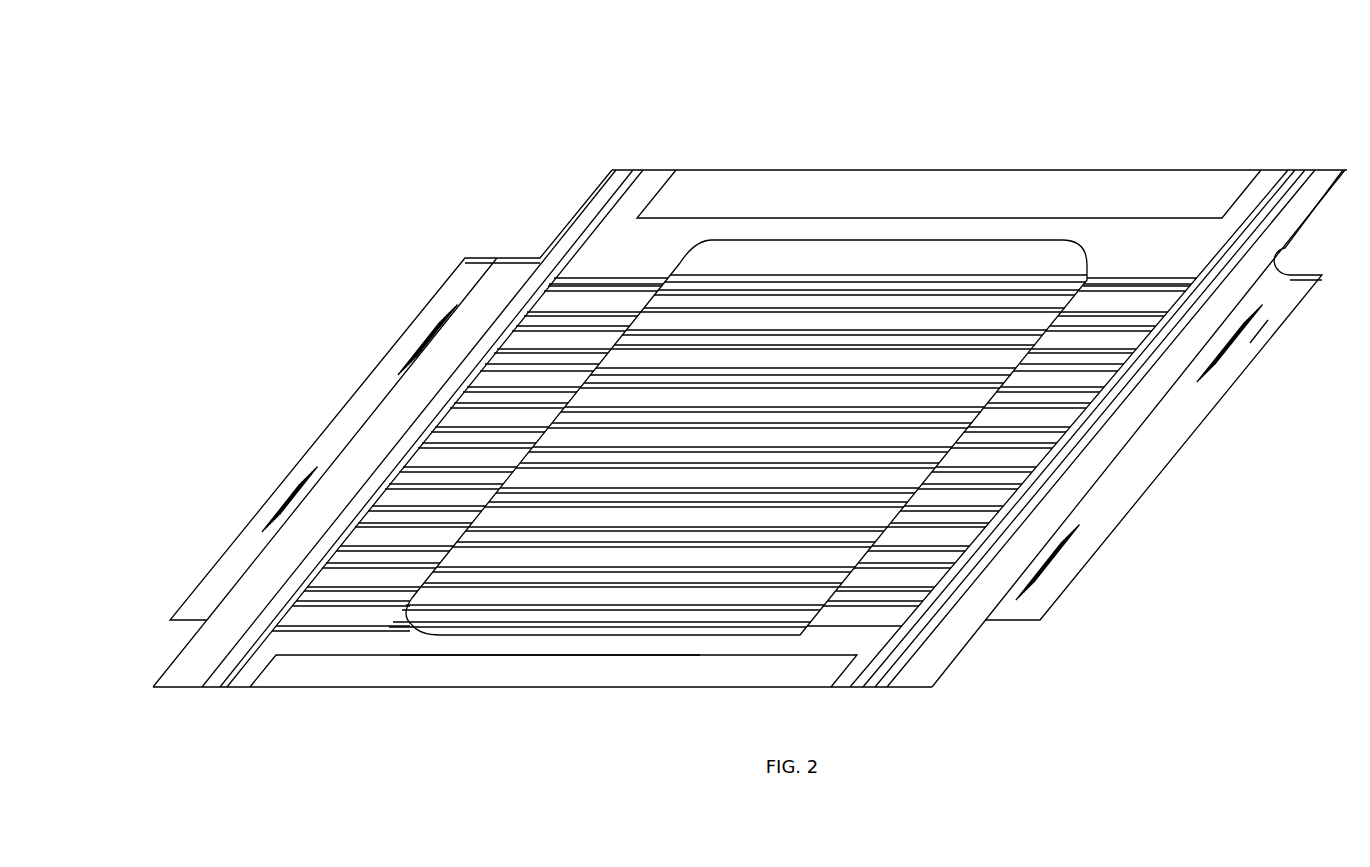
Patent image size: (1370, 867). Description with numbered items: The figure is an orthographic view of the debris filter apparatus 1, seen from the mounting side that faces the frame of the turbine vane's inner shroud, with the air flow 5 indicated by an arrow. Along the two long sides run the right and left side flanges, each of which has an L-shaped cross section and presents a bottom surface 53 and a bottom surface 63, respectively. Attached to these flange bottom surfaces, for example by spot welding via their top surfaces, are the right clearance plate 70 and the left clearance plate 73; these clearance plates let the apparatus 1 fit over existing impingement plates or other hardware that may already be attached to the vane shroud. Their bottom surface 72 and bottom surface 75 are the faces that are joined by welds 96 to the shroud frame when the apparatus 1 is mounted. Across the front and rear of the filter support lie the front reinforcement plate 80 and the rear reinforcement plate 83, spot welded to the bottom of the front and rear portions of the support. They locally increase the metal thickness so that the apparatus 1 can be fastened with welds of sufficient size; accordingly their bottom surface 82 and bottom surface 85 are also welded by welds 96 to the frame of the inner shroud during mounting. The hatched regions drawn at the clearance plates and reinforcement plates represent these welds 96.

The debris filter apparatus 1 is at (774, 93).
The air flow 5 is at (1061, 657).
The bottom surface 53 is at (375, 424).
The bottom surface 63 is at (1130, 436).
The right clearance plate 70 is at (187, 606).
The bottom surface 72 is at (248, 543).
The left clearance plate 73 is at (1080, 568).
The bottom surface 75 is at (1251, 345).
The front reinforcement plate 80 is at (546, 678).
The bottom surface 82 is at (752, 678).
The rear reinforcement plate 83 is at (900, 186).
The bottom surface 85 is at (1110, 188).
The welds 96 is at (430, 322).